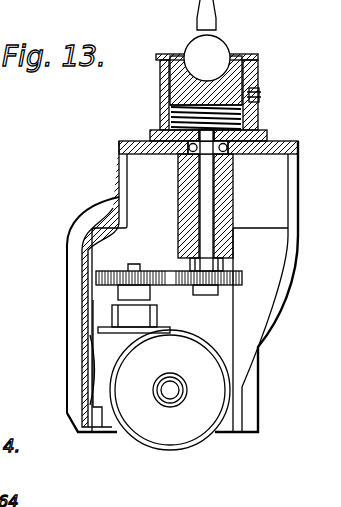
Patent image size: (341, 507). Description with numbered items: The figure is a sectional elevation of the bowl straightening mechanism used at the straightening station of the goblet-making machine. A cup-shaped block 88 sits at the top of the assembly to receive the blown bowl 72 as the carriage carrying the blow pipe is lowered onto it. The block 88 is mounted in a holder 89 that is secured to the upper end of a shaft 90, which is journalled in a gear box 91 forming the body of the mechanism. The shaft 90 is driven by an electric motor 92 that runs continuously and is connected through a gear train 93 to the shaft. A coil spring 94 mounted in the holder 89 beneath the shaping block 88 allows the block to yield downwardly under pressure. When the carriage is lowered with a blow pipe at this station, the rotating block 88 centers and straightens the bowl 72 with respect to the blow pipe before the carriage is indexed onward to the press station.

The bowl 72 is at (203, 52).
The cup-shaped block 88 is at (237, 55).
The holder 89 is at (255, 77).
The shaft 90 is at (207, 183).
The gear box 91 is at (118, 202).
The electric motor 92 is at (150, 432).
The gear train 93 is at (170, 284).
The coil spring 94 is at (244, 116).